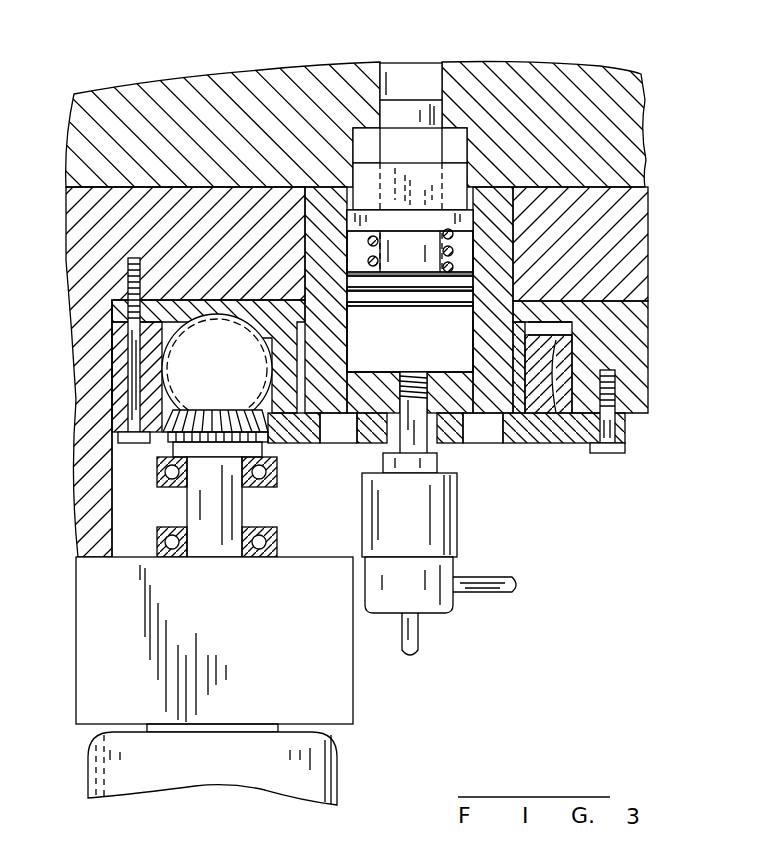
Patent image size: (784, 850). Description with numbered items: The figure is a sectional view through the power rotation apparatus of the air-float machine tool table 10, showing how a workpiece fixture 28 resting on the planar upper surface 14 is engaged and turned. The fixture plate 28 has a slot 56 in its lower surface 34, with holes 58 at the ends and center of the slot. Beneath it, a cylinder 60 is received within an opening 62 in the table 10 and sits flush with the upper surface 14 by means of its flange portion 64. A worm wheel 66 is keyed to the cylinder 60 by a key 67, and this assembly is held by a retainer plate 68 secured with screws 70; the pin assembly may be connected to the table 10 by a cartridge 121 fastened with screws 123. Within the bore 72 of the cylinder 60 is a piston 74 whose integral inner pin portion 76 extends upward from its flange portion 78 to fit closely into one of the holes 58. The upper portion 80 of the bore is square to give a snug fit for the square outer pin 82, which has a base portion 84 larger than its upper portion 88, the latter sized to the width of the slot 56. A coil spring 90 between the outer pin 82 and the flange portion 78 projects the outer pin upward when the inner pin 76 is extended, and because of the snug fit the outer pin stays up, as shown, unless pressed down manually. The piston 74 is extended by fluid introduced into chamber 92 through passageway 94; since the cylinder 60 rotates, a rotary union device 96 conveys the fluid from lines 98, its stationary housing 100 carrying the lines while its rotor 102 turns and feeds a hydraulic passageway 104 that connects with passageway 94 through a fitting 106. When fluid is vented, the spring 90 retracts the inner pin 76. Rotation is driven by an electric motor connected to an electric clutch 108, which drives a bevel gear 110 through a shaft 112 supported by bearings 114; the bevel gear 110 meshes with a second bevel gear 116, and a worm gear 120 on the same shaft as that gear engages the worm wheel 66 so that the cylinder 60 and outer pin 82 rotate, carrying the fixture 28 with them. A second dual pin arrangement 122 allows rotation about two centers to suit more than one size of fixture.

The air-float machine tool table 10 is at (650, 242).
The upper surface 14 is at (208, 178).
The workpiece fixture 28 is at (646, 118).
The lower surface 34 is at (570, 186).
The slot 56 is at (365, 136).
The holes 58 is at (392, 108).
The cylinder 60 is at (504, 283).
The opening 62 is at (305, 284).
The flange portion 64 is at (530, 328).
The worm wheel 66 is at (545, 370).
The key 67 is at (513, 366).
The retainer plate 68 is at (556, 443).
The screws 70 is at (608, 453).
The bore 72 is at (348, 346).
The piston 74 is at (427, 310).
The inner pin portion 76 is at (425, 104).
The flange portion 78 is at (404, 298).
The upper portion of bore 80 is at (350, 257).
The outer pin 82 is at (363, 188).
The base portion 84 is at (468, 222).
The upper portion 88 is at (453, 163).
The coil spring 90 is at (453, 247).
The chamber 92 is at (360, 345).
The passageway 94 is at (410, 372).
The rotary union device 96 is at (462, 515).
The hydraulic lines 98 is at (495, 588).
The stationary housing 100 is at (458, 548).
The rotor 102 is at (453, 440).
The hydraulic passageway 104 is at (415, 372).
The fitting 106 is at (332, 782).
The electric clutch 108 is at (350, 700).
The bevel gear 110 is at (218, 406).
The shaft 112 is at (240, 513).
The bearings 114 is at (278, 470).
The second bevel gear 116 is at (173, 300).
The worm gear 120 is at (238, 314).
The cartridge 121 is at (648, 378).
The second dual pin arrangement 122 is at (600, 70).
The screws 123 is at (133, 385).